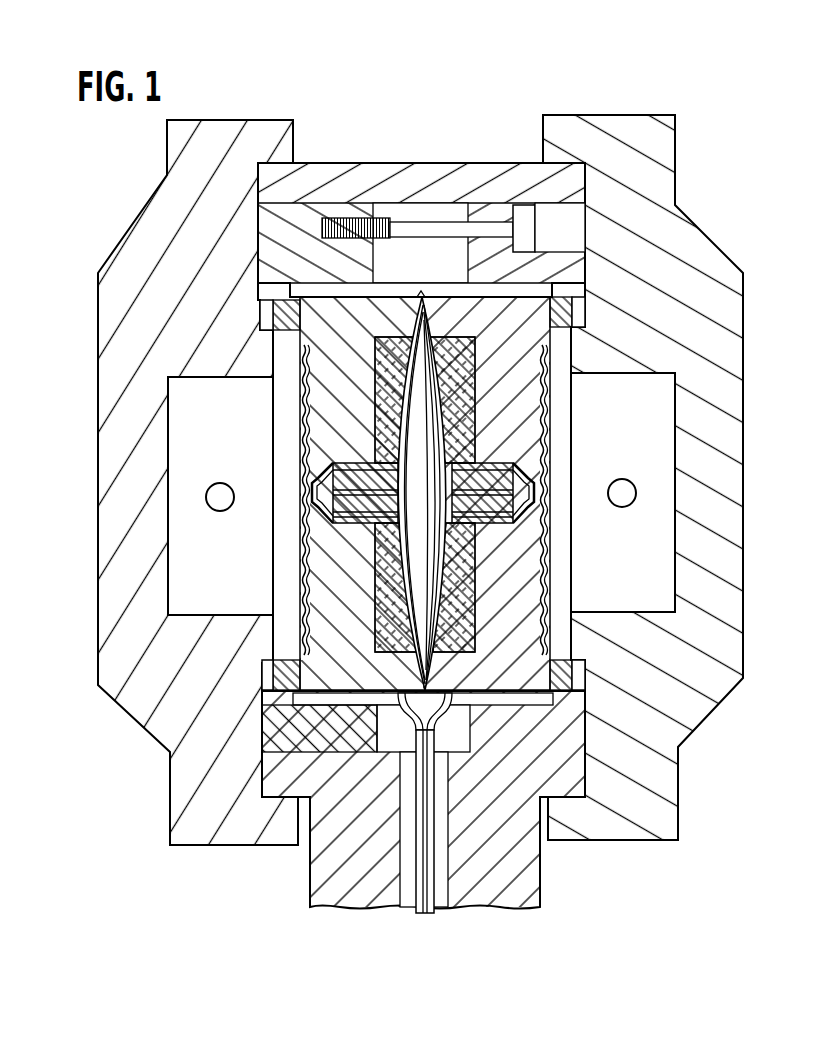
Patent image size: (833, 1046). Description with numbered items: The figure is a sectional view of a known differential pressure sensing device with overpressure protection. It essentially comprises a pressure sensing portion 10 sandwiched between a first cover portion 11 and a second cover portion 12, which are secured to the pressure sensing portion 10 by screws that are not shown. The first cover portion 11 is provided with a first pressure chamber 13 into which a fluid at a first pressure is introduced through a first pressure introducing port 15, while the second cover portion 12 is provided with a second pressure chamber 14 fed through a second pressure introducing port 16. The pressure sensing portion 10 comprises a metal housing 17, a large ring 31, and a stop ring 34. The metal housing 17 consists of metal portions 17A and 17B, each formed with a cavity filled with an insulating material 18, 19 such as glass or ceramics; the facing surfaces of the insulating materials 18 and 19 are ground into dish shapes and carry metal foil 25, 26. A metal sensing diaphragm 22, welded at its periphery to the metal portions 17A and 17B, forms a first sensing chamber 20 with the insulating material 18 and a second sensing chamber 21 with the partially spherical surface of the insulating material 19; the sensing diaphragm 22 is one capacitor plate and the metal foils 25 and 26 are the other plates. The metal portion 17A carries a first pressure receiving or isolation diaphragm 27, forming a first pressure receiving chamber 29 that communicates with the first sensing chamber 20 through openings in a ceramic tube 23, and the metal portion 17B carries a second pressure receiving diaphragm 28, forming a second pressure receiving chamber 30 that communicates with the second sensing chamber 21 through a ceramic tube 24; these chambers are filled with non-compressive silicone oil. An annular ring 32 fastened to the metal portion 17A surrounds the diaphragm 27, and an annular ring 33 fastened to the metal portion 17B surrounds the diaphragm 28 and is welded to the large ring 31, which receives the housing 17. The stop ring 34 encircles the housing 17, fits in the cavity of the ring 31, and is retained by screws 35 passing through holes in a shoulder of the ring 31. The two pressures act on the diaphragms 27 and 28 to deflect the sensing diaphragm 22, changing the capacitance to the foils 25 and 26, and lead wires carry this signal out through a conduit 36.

The pressure sensing portion 10 is at (402, 155).
The first cover portion 11 is at (160, 199).
The second cover portion 12 is at (708, 217).
The first pressure chamber 13 is at (182, 572).
The second pressure chamber 14 is at (660, 480).
The first pressure introducing port 15 is at (222, 484).
The second pressure introducing port 16 is at (626, 480).
The metal housing 17 is at (416, 286).
The metal portion 17A is at (383, 295).
The metal portion 17B is at (450, 295).
The insulating material 18 is at (385, 367).
The insulating material 19 is at (463, 365).
The first sensing chamber 20 is at (398, 396).
The second sensing chamber 21 is at (445, 405).
The sensing diaphragm 22 is at (431, 445).
The ceramic tube 23 is at (330, 534).
The ceramic tube 24 is at (500, 545).
The metal foil 25 is at (395, 546).
The metal foil 26 is at (440, 575).
The first pressure receiving diaphragm 27 is at (300, 602).
The second pressure receiving diaphragm 28 is at (553, 597).
The first pressure receiving chamber 29 is at (311, 477).
The second pressure receiving chamber 30 is at (535, 495).
The ring 31 is at (502, 160).
The annular ring 32 is at (260, 318).
The annular ring 33 is at (560, 313).
The stop ring 34 is at (382, 210).
The screws 35 is at (455, 230).
The conduit 36 is at (433, 900).